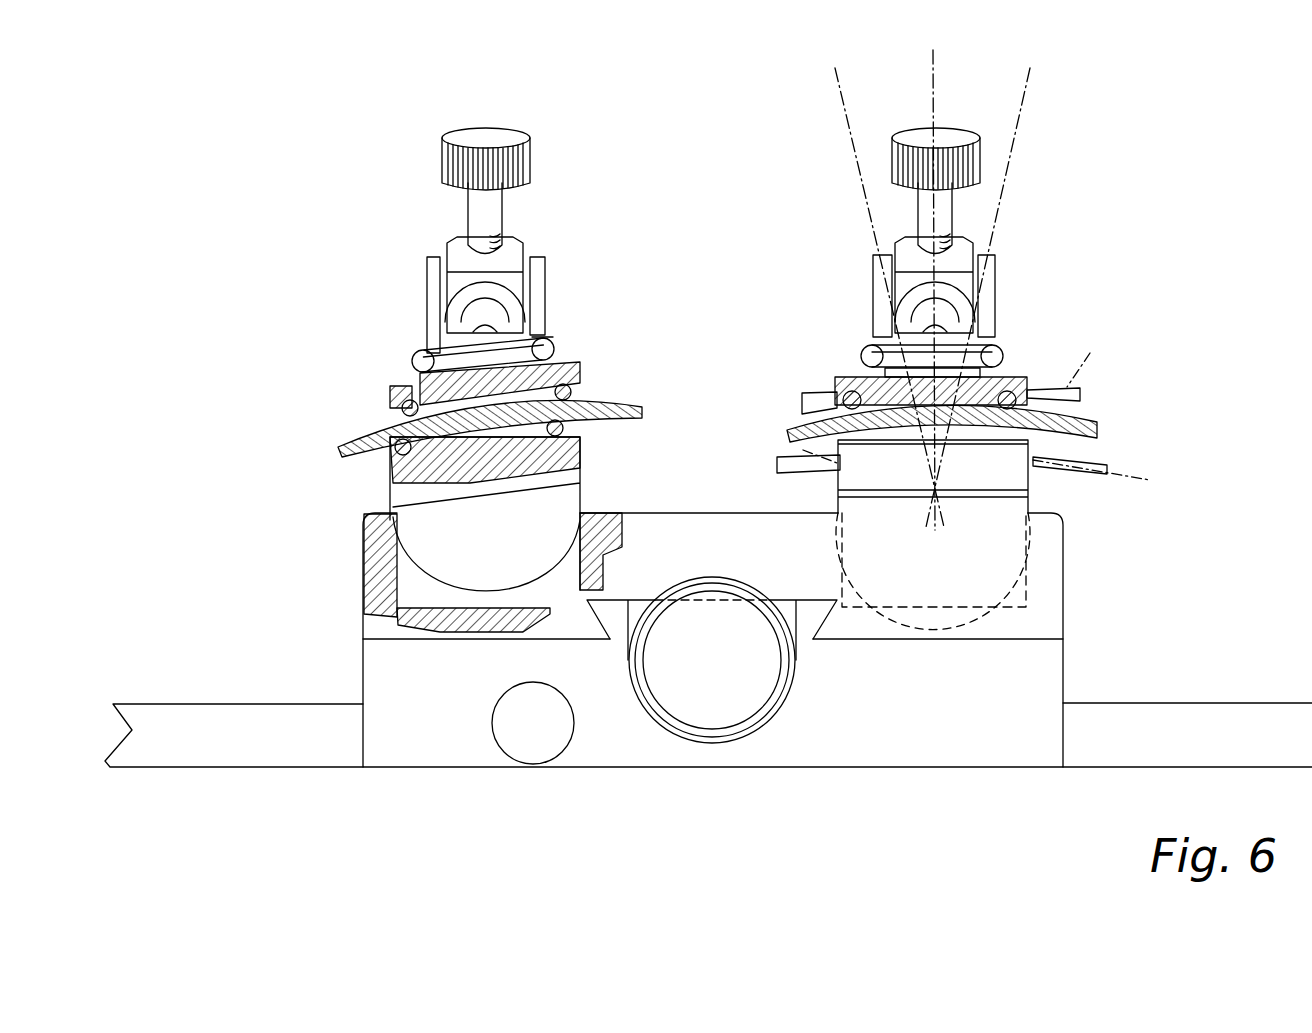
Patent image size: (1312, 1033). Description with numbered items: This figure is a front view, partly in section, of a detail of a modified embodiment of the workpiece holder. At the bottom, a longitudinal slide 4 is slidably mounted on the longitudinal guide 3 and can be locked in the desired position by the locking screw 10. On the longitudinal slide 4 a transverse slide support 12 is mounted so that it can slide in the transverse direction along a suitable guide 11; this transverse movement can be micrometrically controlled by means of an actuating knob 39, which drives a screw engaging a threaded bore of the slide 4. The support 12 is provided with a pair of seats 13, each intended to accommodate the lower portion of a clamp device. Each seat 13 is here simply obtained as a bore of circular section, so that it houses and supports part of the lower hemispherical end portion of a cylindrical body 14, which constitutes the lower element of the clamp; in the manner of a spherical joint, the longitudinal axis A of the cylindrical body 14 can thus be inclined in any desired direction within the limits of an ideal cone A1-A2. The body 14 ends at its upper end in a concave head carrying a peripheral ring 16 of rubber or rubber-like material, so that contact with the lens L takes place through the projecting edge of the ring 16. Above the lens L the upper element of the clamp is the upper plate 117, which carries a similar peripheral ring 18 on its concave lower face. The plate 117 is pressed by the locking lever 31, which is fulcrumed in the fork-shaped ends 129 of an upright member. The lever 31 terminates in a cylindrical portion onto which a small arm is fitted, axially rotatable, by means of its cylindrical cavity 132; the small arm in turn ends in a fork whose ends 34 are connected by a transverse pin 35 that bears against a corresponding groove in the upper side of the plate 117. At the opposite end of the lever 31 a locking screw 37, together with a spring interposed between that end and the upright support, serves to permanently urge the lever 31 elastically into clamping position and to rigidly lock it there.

The longitudinal guide 3 is at (1255, 712).
The longitudinal slide 4 is at (1050, 673).
The locking screw 10 is at (532, 745).
The guide 11 is at (815, 607).
The transverse slide support 12 is at (1053, 575).
The seat 13 is at (1080, 601).
The cylindrical body 14 is at (1030, 485).
The peripheral ring 16 is at (565, 433).
The peripheral ring 18 is at (402, 410).
The locking lever 31 is at (517, 245).
The fork ends 34 is at (993, 340).
The transverse pin 35 is at (443, 360).
The locking screw 37 is at (960, 140).
The actuating knob 39 is at (716, 712).
The upper plate 117 is at (1027, 375).
The fork-shaped ends 129 is at (430, 258).
The cylindrical cavity 132 is at (463, 300).
The lens L is at (1097, 427).
The longitudinal axis A is at (932, 271).
The cone limit A1 is at (880, 274).
The cone limit A2 is at (993, 271).